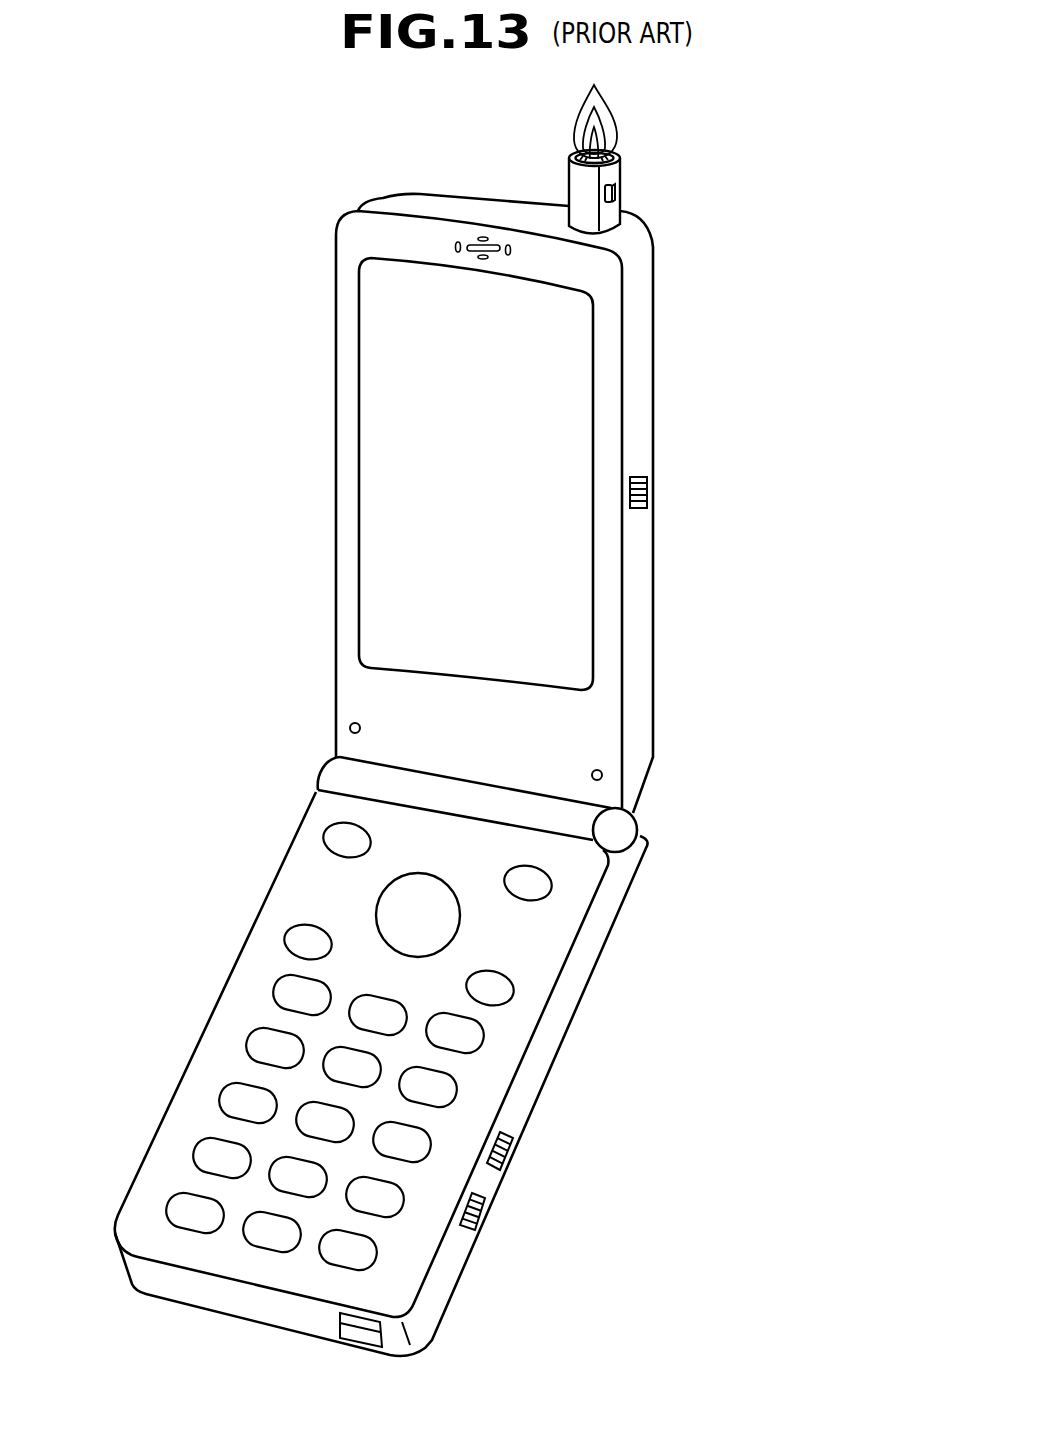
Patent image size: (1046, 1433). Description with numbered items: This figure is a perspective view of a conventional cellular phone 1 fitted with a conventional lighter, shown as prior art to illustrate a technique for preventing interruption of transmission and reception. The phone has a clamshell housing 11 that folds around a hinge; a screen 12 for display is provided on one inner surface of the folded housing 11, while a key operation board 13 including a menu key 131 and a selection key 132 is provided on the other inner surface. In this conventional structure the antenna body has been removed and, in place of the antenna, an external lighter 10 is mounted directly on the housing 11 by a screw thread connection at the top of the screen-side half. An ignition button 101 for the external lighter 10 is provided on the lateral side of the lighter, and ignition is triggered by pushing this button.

The cellular phone 1 is at (294, 284).
The external lighter 10 is at (618, 156).
The ignition button 101 is at (615, 193).
The housing 11 is at (632, 613).
The screen 12 is at (383, 478).
The key operation board 13 is at (487, 1103).
The menu key 131 is at (513, 978).
The selection key 132 is at (395, 904).